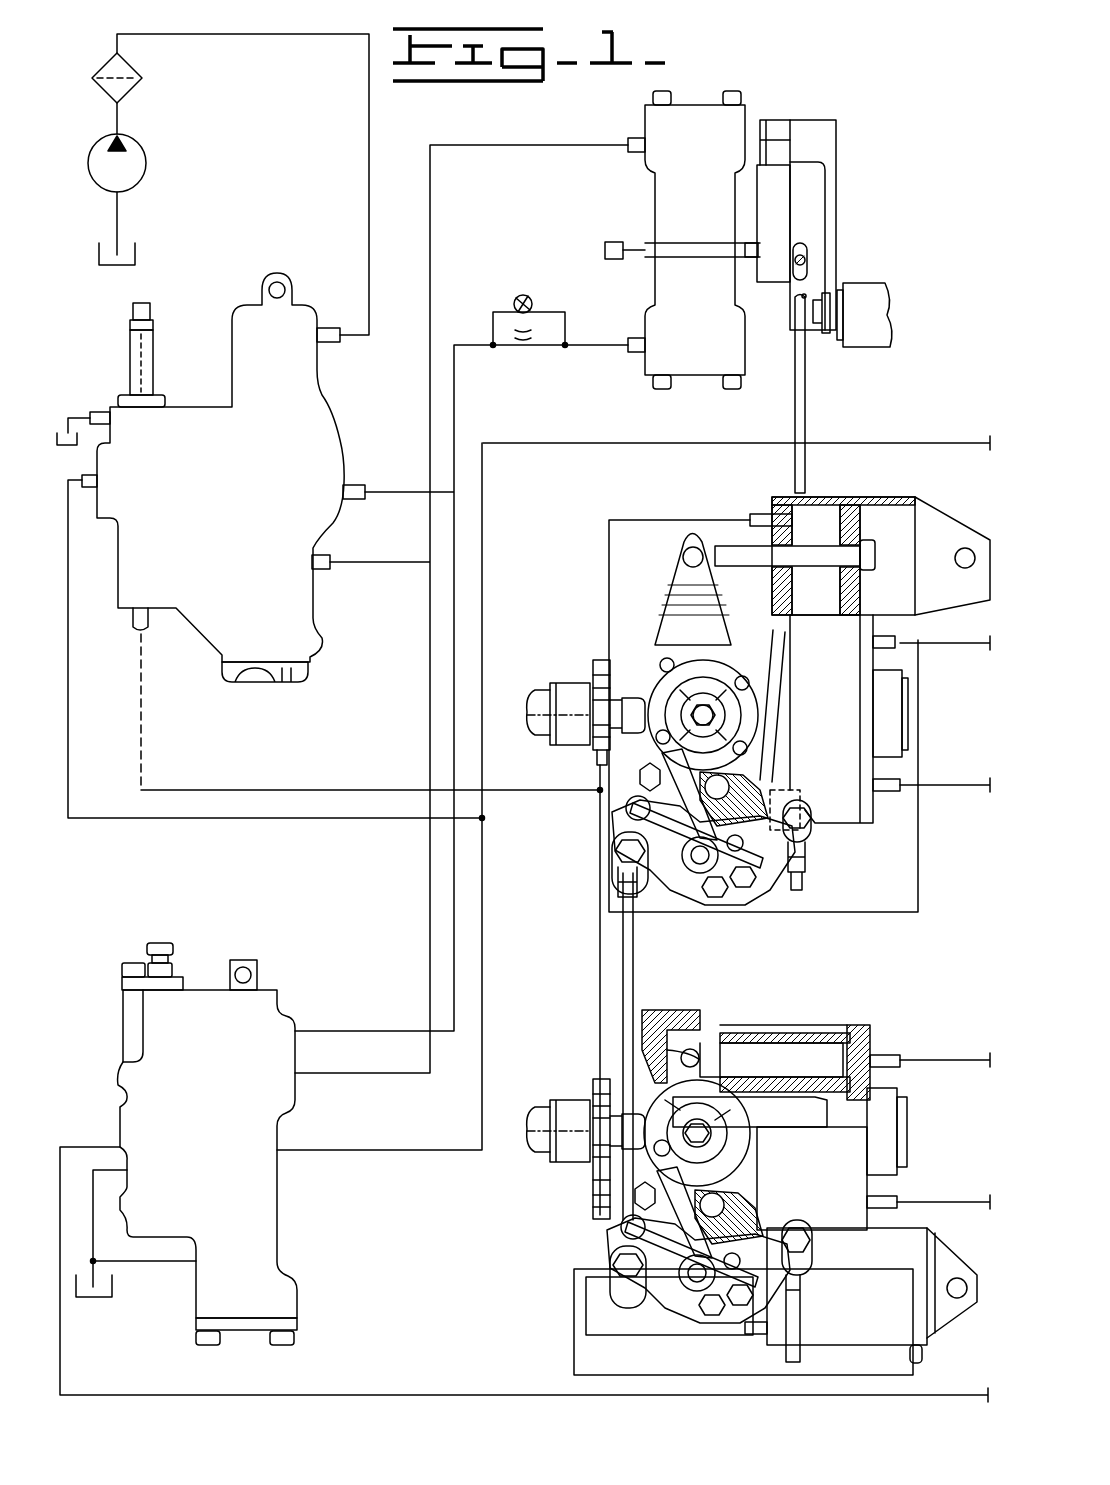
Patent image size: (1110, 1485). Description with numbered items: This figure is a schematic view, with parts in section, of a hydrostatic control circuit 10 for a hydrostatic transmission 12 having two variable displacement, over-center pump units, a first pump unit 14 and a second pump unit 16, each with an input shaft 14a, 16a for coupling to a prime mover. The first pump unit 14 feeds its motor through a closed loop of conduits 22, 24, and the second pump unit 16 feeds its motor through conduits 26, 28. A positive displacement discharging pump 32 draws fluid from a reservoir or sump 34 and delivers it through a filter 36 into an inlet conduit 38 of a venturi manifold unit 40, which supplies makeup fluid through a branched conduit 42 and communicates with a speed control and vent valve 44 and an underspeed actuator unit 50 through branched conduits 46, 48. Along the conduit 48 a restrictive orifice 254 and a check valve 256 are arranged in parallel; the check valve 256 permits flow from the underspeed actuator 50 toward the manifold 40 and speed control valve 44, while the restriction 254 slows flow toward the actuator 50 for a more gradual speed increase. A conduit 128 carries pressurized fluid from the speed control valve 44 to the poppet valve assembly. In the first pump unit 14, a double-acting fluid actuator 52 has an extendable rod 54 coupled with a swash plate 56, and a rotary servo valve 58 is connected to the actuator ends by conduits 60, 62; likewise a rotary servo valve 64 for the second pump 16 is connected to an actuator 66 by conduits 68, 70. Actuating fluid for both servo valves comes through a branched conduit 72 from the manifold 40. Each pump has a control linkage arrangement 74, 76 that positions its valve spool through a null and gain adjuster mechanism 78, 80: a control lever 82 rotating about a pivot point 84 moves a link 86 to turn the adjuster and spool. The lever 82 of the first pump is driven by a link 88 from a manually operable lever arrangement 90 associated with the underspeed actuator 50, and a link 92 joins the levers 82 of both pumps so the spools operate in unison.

The hydrostatic control circuit 10 is at (716, 74).
The hydrostatic transmission 12 is at (880, 442).
The first pump unit 14 is at (831, 719).
The input shaft 14a is at (548, 705).
The second pump unit 16 is at (790, 1159).
The input shaft 16a is at (548, 1105).
The conduit 22 is at (938, 785).
The conduit 24 is at (945, 643).
The conduit 26 is at (925, 1060).
The conduit 28 is at (935, 1203).
The positive displacement discharging pump 32 is at (145, 160).
The reservoir or sump 34 is at (138, 248).
The filter 36 is at (130, 62).
The inlet conduit 38 is at (311, 34).
The venturi manifold unit 40 is at (211, 477).
The branched conduit 42 is at (320, 830).
The speed control and vent valve 44 is at (207, 1144).
The branched conduit 46 is at (458, 145).
The branched conduit 48 is at (458, 445).
The underspeed actuator unit 50 is at (682, 240).
The double-acting fluid actuator 52 is at (850, 497).
The extendable rod 54 is at (822, 556).
The swash plate 56 is at (693, 590).
The rotary servo valve 58 is at (652, 677).
The conduit 60 is at (818, 912).
The conduit 62 is at (645, 520).
The rotary servo valve 64 is at (643, 1158).
The actuator 66 is at (861, 1295).
The conduit 68 is at (716, 1335).
The conduit 70 is at (572, 1370).
The branched conduit 72 is at (284, 790).
The control linkage arrangement 74 is at (681, 892).
The control linkage arrangement 76 is at (664, 1309).
The null and gain adjuster mechanism 78 is at (748, 740).
The null and gain adjuster mechanism 80 is at (745, 1164).
The control lever 82 is at (645, 872).
The pivot point 84 is at (747, 844).
The link 86 is at (677, 793).
The link 88 is at (793, 410).
The manually operable lever arrangement 90 is at (843, 240).
The link 92 is at (636, 1005).
The conduit 128 is at (60, 1352).
The restrictive orifice 254 is at (515, 352).
The check valve 256 is at (522, 296).